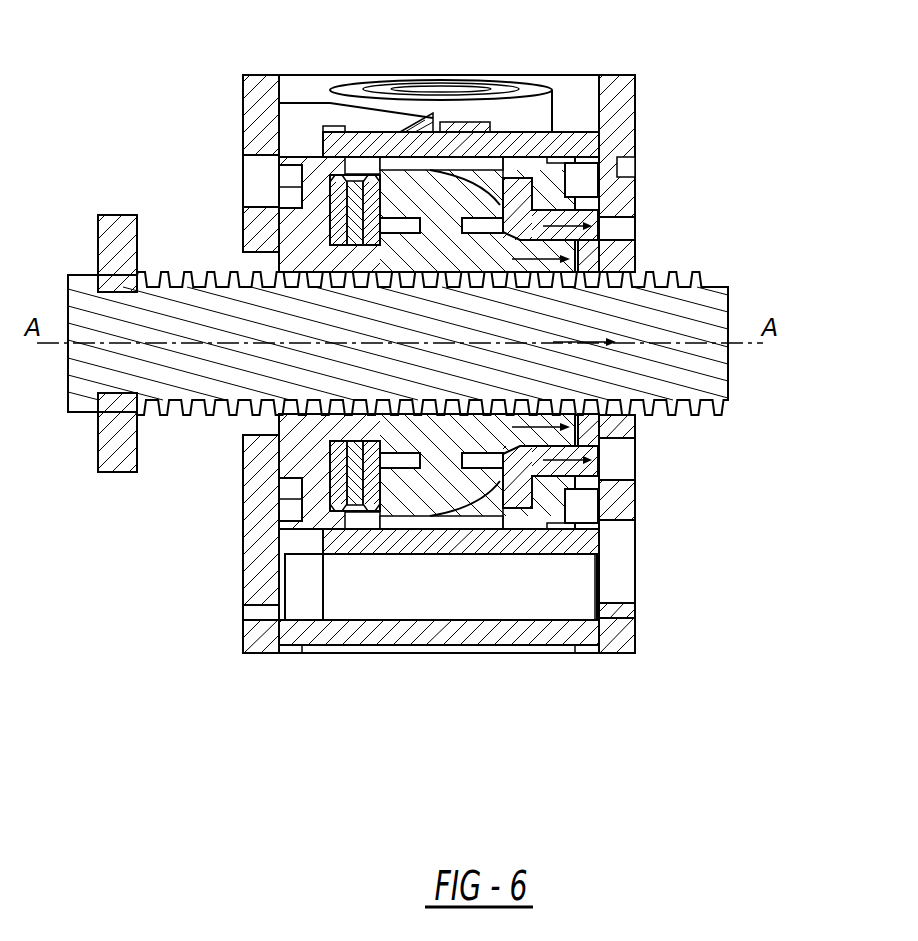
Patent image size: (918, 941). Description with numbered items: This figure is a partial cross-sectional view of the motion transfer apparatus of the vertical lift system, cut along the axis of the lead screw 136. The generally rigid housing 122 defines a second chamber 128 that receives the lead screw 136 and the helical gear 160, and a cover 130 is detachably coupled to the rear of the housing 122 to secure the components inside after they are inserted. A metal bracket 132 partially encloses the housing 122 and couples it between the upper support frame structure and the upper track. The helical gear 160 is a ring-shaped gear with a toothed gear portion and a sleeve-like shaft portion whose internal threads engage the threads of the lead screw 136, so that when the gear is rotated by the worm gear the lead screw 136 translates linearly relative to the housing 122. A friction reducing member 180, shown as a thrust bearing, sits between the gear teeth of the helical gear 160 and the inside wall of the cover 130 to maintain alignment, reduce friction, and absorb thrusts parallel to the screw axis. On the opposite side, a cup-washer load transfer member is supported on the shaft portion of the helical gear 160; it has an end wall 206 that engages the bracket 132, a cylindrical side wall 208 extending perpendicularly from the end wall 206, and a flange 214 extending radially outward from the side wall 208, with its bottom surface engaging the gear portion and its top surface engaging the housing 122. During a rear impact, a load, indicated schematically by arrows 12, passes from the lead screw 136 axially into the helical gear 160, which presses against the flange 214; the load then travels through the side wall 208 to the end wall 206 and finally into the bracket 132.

The load arrows 12 is at (566, 342).
The housing 122 is at (455, 645).
The second chamber 128 is at (472, 172).
The cover 130 is at (315, 640).
The bracket 132 is at (262, 642).
The lead screw 136 is at (720, 376).
The helical gear 160 is at (413, 503).
The friction reducing member 180 is at (373, 493).
The end wall 206 is at (588, 242).
The side wall 208 is at (552, 471).
The flange 214 is at (533, 207).